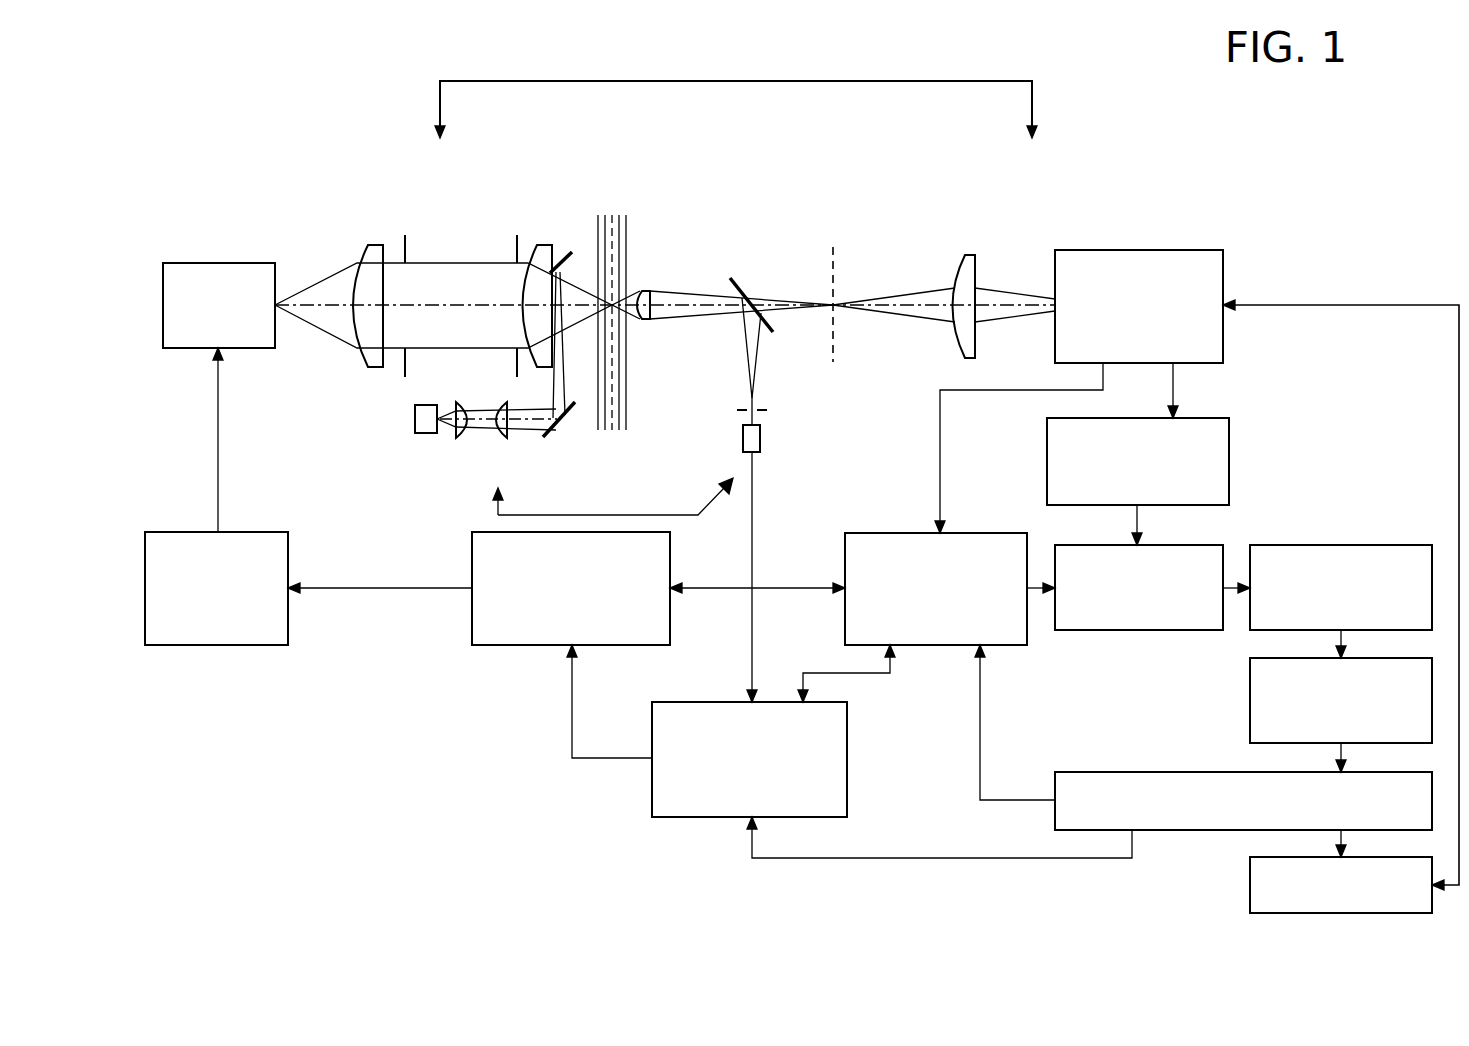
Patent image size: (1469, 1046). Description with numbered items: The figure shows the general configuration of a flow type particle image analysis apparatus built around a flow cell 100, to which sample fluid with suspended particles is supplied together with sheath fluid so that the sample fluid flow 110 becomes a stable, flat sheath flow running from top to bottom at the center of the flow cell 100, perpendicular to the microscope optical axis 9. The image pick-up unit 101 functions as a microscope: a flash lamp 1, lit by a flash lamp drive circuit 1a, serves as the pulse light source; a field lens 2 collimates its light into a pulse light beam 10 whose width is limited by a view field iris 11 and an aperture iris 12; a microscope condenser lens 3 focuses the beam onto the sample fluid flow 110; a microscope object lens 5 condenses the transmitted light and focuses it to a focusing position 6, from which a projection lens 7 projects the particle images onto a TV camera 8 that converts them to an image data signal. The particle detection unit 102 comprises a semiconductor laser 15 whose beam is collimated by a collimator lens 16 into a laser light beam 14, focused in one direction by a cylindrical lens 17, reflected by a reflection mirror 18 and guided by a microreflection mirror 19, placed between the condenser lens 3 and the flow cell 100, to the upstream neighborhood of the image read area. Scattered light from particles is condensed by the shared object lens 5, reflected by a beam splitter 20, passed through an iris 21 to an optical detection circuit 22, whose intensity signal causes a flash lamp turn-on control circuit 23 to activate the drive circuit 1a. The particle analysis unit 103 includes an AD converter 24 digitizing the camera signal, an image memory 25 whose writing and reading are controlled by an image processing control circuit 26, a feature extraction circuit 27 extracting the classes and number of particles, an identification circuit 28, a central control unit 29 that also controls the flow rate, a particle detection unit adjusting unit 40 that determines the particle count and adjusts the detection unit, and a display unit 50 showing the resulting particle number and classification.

The flash lamp 1 is at (218, 262).
The flash lamp drive circuit 1a is at (243, 645).
The field lens 2 is at (373, 245).
The microscope condenser lens 3 is at (540, 245).
The microscope object lens 5 is at (650, 292).
The focusing position 6 is at (840, 270).
The projection lens 7 is at (966, 255).
The TV camera 8 is at (1140, 250).
The microscope optical axis 9 is at (458, 310).
The pulse light beam 10 is at (472, 263).
The view field iris 11 is at (405, 236).
The aperture iris 12 is at (516, 235).
The laser light beam 14 is at (497, 462).
The semiconductor laser 15 is at (415, 418).
The collimator lens 16 is at (458, 438).
The cylindrical lens 17 is at (502, 438).
The reflection mirror 18 is at (572, 425).
The microreflection mirror 19 is at (570, 252).
The beam splitter 20 is at (745, 288).
The iris 21 is at (767, 410).
The optical detection circuit 22 is at (760, 440).
The flash lamp turn-on control circuit 23 is at (497, 645).
The AD converter 24 is at (1229, 458).
The image memory 25 is at (1097, 630).
The image processing control circuit 26 is at (935, 645).
The feature extraction circuit 27 is at (1370, 545).
The identification circuit 28 is at (1250, 700).
The central control unit 29 is at (1123, 772).
The particle detection unit adjusting unit 40 is at (848, 778).
The display unit 50 is at (1250, 885).
The flow cell 100 is at (627, 226).
The image pick-up unit 101 is at (736, 109).
The particle detection unit 102 is at (615, 496).
The particle analysis unit 103 is at (1341, 581).
The sample fluid flow 110 is at (627, 250).